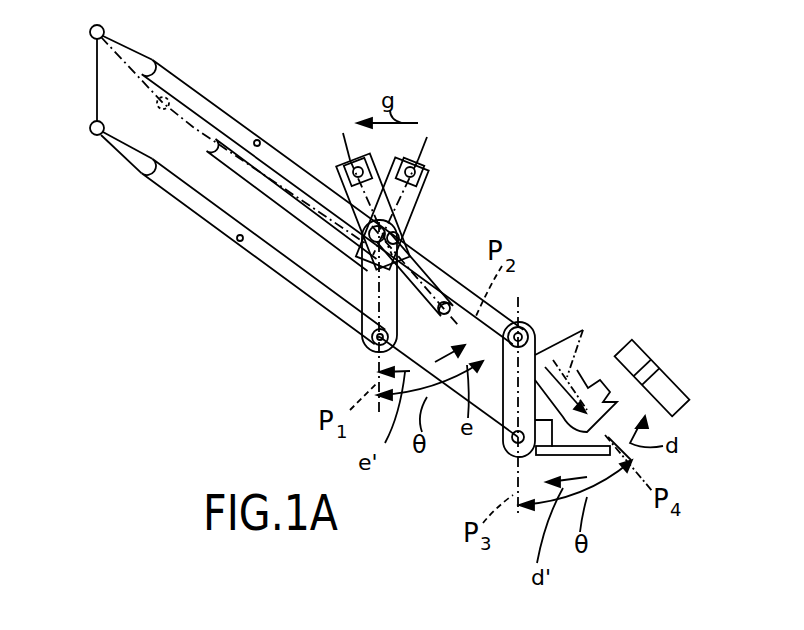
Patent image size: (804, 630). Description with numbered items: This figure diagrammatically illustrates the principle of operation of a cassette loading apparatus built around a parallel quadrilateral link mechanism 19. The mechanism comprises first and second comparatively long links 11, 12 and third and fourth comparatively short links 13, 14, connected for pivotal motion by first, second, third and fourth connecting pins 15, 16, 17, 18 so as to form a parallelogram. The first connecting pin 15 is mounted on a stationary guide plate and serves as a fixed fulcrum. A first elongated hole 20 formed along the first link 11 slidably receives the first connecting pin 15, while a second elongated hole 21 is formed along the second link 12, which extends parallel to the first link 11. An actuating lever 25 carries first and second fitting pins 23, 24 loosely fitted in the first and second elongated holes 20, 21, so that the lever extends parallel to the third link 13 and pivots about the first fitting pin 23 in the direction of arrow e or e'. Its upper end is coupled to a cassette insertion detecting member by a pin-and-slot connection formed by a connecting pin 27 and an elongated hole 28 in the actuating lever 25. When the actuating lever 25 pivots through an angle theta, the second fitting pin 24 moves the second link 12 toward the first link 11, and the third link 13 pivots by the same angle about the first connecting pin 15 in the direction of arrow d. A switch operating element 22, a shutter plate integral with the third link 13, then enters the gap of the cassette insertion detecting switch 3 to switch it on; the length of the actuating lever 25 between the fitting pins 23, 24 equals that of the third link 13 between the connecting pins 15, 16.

The cassette insertion detecting switch 3 is at (631, 340).
The first link 11 is at (220, 108).
The second link 12 is at (197, 212).
The third link 13 is at (585, 328).
The fourth link 14 is at (97, 75).
The first connecting pin 15 is at (528, 328).
The second connecting pin 16 is at (512, 446).
The third connecting pin 17 is at (90, 128).
The fourth connecting pin 18 is at (90, 31).
The parallel quadrilateral link mechanism 19 is at (130, 189).
The first elongated hole 20 is at (258, 141).
The second elongated hole 21 is at (239, 241).
The switch operating element 22 is at (662, 358).
The first fitting pin 23 is at (400, 234).
The second fitting pin 24 is at (368, 340).
The actuating lever 25 is at (365, 285).
The connecting pin 27 is at (413, 160).
The elongated hole 28 is at (424, 183).